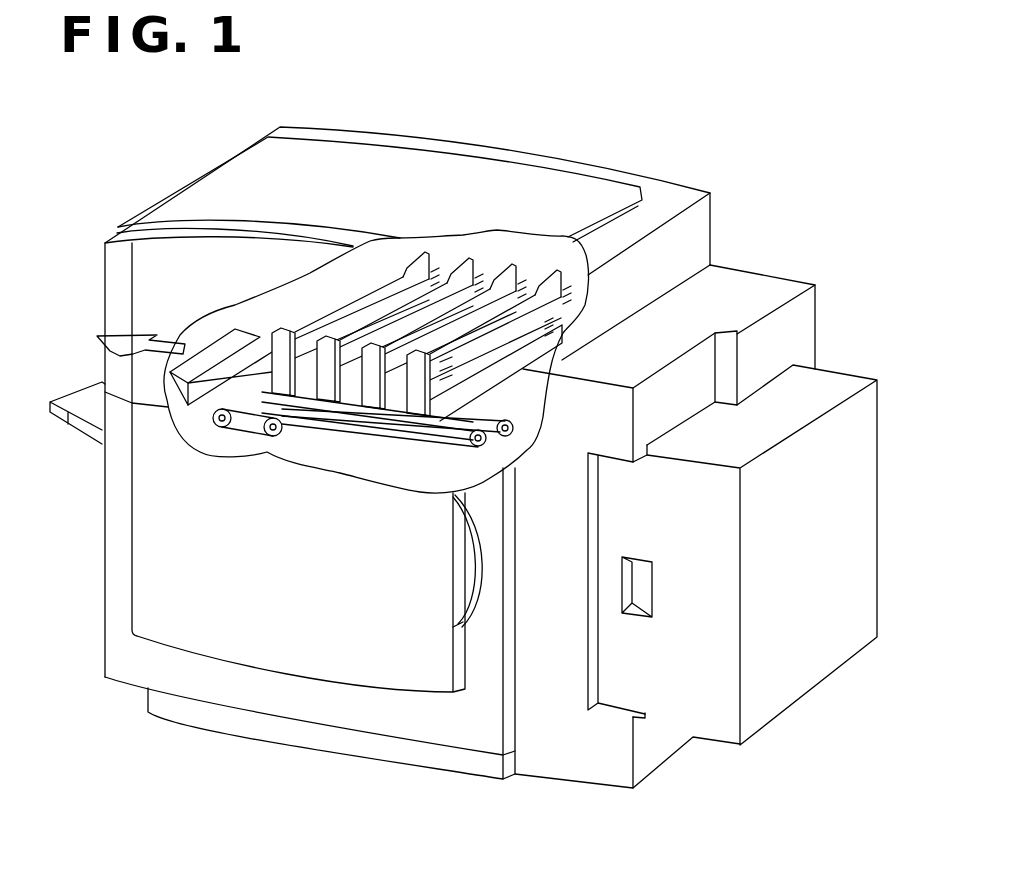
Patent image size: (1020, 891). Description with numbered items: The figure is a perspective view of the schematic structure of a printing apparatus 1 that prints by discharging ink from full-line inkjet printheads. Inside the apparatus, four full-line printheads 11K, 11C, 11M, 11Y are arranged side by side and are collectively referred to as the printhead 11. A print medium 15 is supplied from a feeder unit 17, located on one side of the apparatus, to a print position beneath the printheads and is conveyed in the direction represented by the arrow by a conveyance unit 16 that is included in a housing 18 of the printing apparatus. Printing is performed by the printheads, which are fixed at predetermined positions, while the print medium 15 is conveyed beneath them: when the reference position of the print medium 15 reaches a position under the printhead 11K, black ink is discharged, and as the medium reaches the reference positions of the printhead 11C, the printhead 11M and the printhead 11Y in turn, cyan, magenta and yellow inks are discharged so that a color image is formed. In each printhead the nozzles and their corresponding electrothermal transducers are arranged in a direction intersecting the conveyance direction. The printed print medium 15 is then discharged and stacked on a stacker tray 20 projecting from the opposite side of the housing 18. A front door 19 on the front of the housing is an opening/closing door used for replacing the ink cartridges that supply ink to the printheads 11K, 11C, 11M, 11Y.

The printing apparatus 1 is at (483, 789).
The printhead 11 is at (401, 223).
The printhead 11Y is at (413, 252).
The printhead 11M is at (460, 256).
The printhead 11C is at (502, 262).
The printhead 11K is at (513, 263).
The print medium 15 is at (533, 386).
The conveyance unit 16 is at (398, 445).
The feeder unit 17 is at (836, 382).
The housing 18 is at (127, 668).
The front door 19 is at (230, 647).
The stacker tray 20 is at (85, 398).